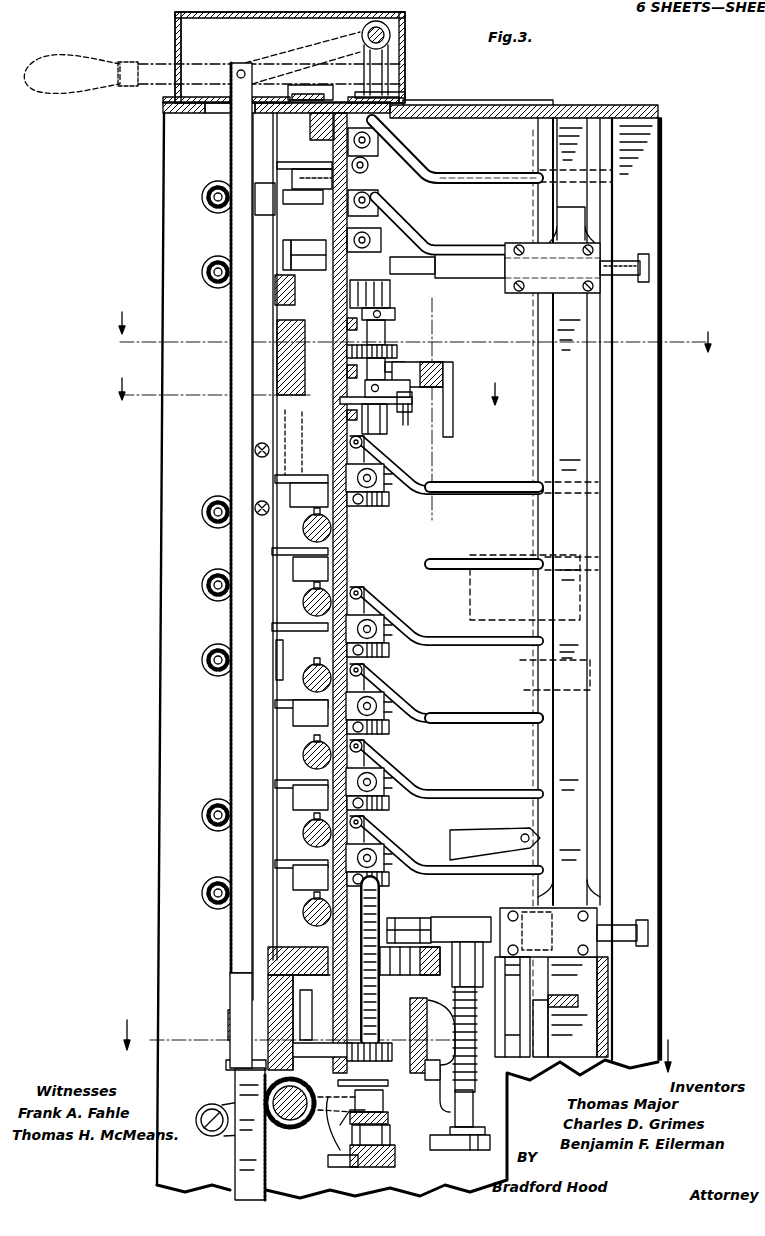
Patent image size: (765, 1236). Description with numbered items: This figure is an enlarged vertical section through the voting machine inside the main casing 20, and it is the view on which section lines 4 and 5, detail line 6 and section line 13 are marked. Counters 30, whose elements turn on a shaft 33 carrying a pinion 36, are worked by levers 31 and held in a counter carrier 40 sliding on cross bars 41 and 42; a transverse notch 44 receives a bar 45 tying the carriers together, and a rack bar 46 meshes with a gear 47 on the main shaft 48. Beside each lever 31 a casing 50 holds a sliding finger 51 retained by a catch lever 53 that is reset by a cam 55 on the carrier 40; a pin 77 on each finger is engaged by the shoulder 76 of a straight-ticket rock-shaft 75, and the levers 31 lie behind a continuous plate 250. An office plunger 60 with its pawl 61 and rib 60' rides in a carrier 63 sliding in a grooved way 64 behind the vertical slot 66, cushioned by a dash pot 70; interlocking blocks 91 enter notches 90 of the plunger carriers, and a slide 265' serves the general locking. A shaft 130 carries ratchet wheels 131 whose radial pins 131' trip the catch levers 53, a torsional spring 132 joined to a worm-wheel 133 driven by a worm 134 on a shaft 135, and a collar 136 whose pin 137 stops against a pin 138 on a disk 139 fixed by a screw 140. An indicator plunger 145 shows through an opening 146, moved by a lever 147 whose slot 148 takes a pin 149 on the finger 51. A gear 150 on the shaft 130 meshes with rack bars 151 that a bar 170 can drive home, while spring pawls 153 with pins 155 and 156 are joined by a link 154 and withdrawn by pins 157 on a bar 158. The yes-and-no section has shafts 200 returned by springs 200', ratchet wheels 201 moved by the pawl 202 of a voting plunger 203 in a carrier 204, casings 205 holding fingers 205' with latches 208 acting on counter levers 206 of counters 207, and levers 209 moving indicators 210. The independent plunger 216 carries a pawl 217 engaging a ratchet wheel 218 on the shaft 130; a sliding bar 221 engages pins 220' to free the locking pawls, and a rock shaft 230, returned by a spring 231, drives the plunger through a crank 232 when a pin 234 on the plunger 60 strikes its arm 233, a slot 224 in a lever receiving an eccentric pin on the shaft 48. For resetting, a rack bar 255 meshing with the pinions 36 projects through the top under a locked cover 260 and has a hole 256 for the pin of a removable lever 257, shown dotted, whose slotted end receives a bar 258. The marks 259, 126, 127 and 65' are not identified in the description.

The removable lever 257 is at (88, 58).
The cover 260 is at (176, 56).
The hole 256 is at (243, 68).
The bar 258 is at (392, 28).
The bracket stem 259 is at (388, 78).
The rack bar 255 is at (240, 147).
The latch 208 is at (287, 162).
The lever 209 is at (380, 132).
The sliding finger 205' is at (434, 151).
The indicator 210 is at (470, 172).
The counter 207 is at (202, 208).
The counter lever 206 is at (288, 224).
The casing 205 is at (310, 231).
The vertical shaft 200 is at (391, 220).
The spring 200' is at (437, 214).
The ratchet wheel 201 is at (400, 262).
The pawl 202 is at (455, 262).
The voting plunger 203 is at (470, 250).
The carrier 204 is at (577, 268).
The bar 170 is at (347, 320).
The section line 6 is at (441, 301).
The gear 150 is at (397, 352).
The section line 4 is at (411, 334).
The cross bar 41 is at (285, 348).
The rack bar 151 is at (385, 365).
The spring pawl 153 is at (420, 385).
The pin 155 is at (452, 380).
The counter carrier 40 is at (258, 374).
The section line 5 is at (304, 398).
The link 154 is at (340, 400).
The bar 158 is at (412, 400).
The pin 157 is at (410, 415).
The pin 156 is at (390, 430).
The lever 147 is at (388, 462).
The slot 148 is at (385, 463).
The link 126 is at (255, 450).
The catch lever 53 is at (283, 475).
The casing 50 is at (303, 483).
The plate 250 is at (205, 965).
The shaft 33 is at (205, 500).
The indicator plunger 145 is at (470, 485).
The opening 146 is at (612, 479).
The main casing 20 is at (652, 489).
The roller 127 is at (255, 510).
The pin 77 is at (303, 528).
The rock-shaft 75 is at (275, 552).
The counter-actuating finger 51 is at (280, 576).
The pin 149 is at (385, 497).
The longitudinal shoulder 76 is at (303, 602).
The radial pin 131' is at (442, 698).
The cam 55 is at (283, 663).
The pinion 36 is at (202, 671).
The ratchet wheel 131 is at (409, 698).
The shaft 130 is at (376, 681).
The counter lever 31 is at (283, 687).
The counter 30 is at (205, 746).
The vertical slot 66 is at (612, 641).
The frame side 65' is at (681, 665).
The slide 265' is at (495, 832).
The grooved way 64 is at (572, 851).
The carrier 63 is at (575, 893).
The office plunger 60 is at (554, 922).
The pawl 61 is at (423, 920).
The arm 233 is at (475, 948).
The pin 234 is at (525, 953).
The rib 60' is at (628, 960).
The notch 90 is at (580, 1001).
The dash pot 70 is at (520, 1001).
The interlocking block 91 is at (539, 1028).
The cross bar 42 is at (270, 981).
The transverse notch 44 is at (228, 1016).
The torsional spring 132 is at (375, 991).
The spring 231 is at (418, 1011).
The shaft 135 is at (308, 1043).
The worm-wheel 133 is at (380, 1043).
The section line 13 is at (392, 1053).
The bar 45 is at (228, 1031).
The main shaft 48 is at (235, 1093).
The worm 134 is at (380, 1083).
The pin 138 is at (375, 1089).
The collar 136 is at (383, 1101).
The rack bar 46 is at (262, 1151).
The gear 47 is at (265, 1139).
The slot 224 is at (280, 1119).
The screw 140 is at (335, 1091).
The pin 137 is at (345, 1131).
The rock shaft 230 is at (477, 1074).
The disk 139 is at (473, 1109).
The independent plunger 216 is at (428, 1121).
The crank 232 is at (462, 1151).
The sliding bar 221 is at (340, 1168).
The pin 220' is at (381, 1169).
The ratchet wheel 218 is at (355, 1171).
The pawl 217 is at (425, 1176).